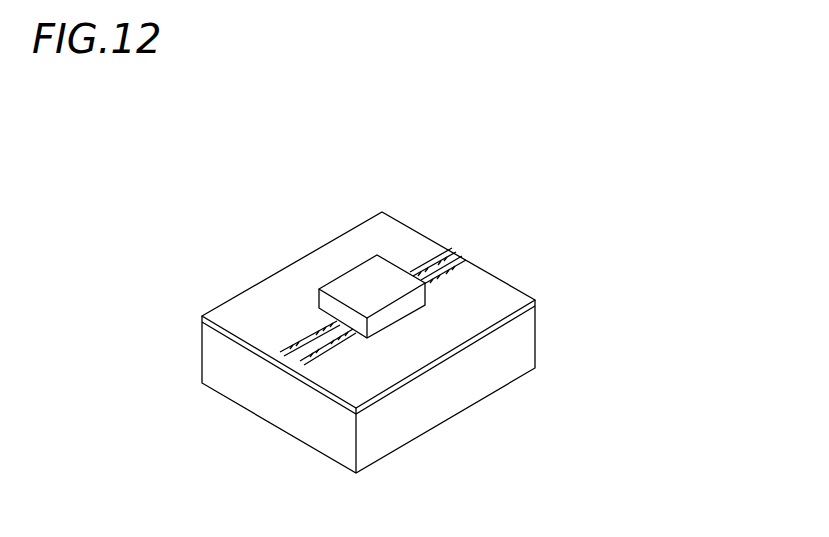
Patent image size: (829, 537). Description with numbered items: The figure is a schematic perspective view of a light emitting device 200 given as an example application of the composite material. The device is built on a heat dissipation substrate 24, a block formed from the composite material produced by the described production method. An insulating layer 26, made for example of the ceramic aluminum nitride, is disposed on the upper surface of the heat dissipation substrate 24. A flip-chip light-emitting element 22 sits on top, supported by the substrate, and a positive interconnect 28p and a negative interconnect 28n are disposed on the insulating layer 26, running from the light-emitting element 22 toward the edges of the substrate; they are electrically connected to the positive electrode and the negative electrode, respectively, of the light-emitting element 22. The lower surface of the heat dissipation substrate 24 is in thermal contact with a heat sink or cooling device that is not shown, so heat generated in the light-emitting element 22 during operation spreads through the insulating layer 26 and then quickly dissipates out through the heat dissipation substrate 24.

The light emitting device 200 is at (264, 181).
The light-emitting element 22 is at (368, 272).
The heat dissipation substrate 24 is at (525, 333).
The insulating layer 26 is at (505, 297).
The negative interconnect 28n is at (308, 340).
The positive interconnect 28p is at (452, 250).